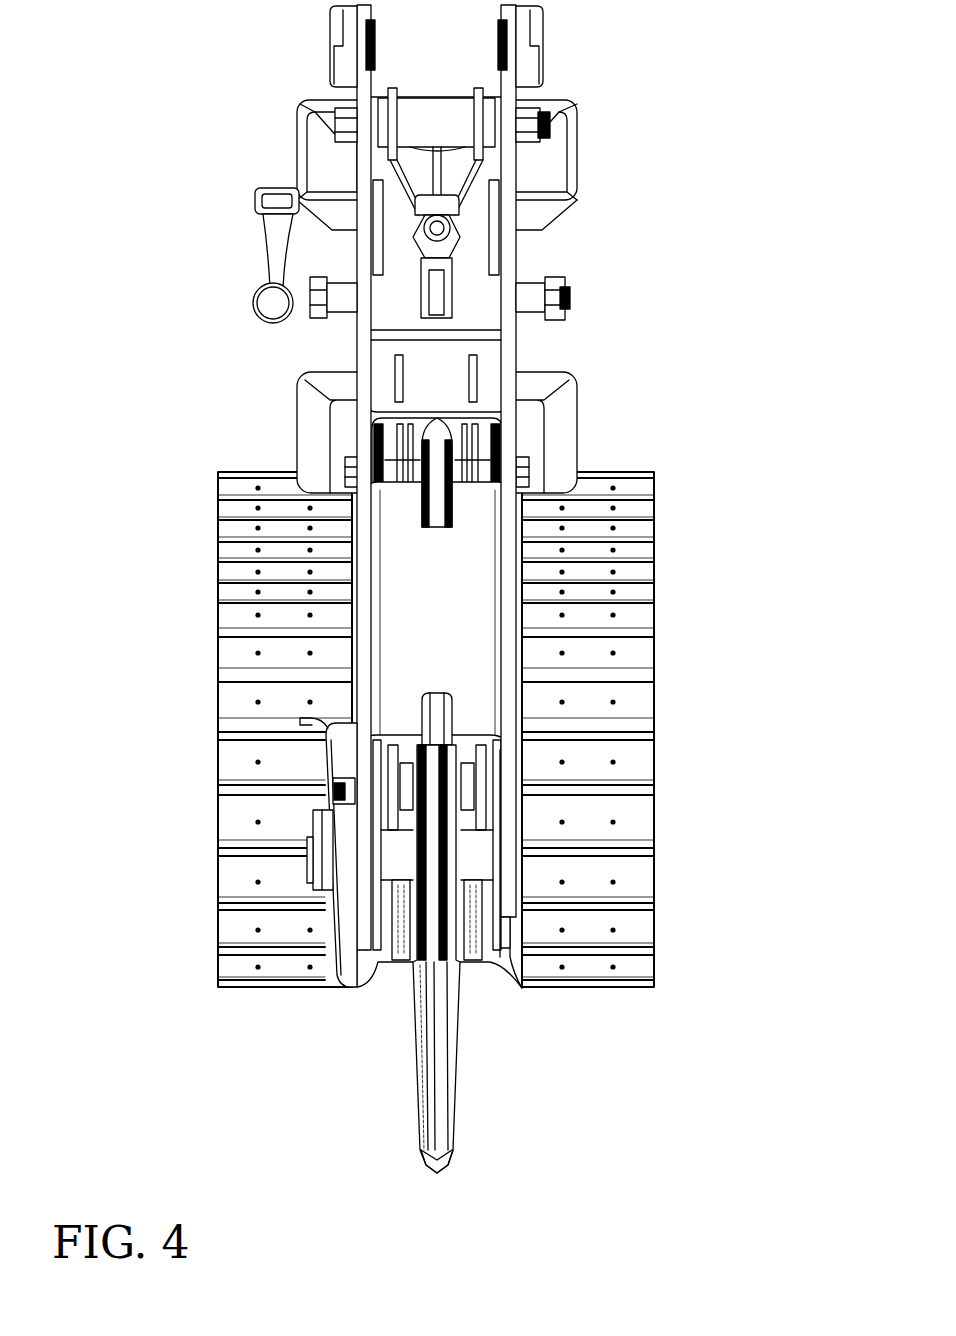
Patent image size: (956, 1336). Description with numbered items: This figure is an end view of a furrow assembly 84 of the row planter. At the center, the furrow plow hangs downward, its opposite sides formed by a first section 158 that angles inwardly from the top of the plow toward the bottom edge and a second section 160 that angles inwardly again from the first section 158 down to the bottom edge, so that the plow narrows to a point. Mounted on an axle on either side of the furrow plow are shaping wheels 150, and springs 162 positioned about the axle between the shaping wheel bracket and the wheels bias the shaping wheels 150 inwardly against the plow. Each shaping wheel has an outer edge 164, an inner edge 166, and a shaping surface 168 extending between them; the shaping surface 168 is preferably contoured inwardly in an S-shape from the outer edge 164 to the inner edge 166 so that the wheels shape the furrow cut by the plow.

The shank assembly 84 is at (411, 980).
The shaping wheels 150 is at (350, 993).
The first section 158 is at (463, 1060).
The second section 160 is at (447, 1160).
The springs 162 is at (310, 870).
The outer edge 164 is at (337, 938).
The inner edge 166 is at (398, 940).
The shaping surface 168 is at (362, 989).